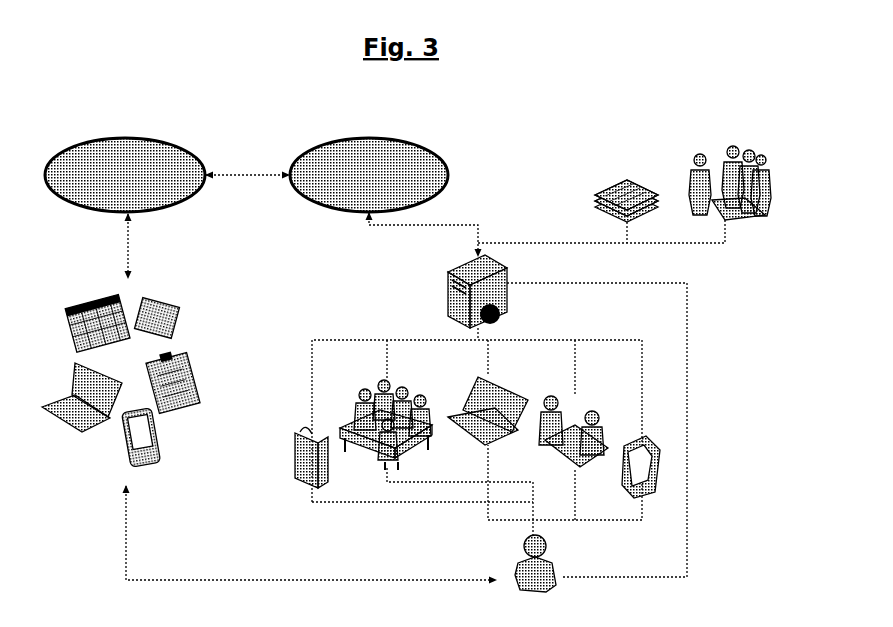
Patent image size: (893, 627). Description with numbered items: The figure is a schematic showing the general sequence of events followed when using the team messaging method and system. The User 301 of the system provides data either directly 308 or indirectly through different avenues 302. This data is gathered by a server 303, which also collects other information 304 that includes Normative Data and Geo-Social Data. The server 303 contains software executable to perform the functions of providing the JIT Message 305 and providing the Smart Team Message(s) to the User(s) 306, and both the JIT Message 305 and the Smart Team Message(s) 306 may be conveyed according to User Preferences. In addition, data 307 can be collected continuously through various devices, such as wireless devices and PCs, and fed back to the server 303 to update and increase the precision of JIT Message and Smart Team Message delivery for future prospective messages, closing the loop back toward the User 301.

The user 301 is at (534, 572).
The data avenues 302 is at (461, 437).
The server 303 is at (467, 297).
The other information 304 is at (628, 197).
The JIT Message 305 is at (342, 197).
The Smart Team Message(s) to the User(s) 306 is at (125, 208).
The data collected through devices 307 is at (269, 437).
The direct data provision 308 is at (597, 430).